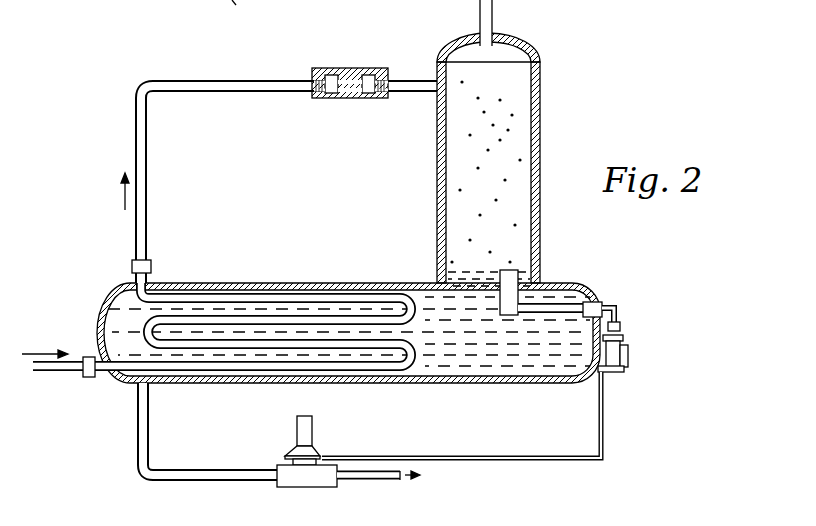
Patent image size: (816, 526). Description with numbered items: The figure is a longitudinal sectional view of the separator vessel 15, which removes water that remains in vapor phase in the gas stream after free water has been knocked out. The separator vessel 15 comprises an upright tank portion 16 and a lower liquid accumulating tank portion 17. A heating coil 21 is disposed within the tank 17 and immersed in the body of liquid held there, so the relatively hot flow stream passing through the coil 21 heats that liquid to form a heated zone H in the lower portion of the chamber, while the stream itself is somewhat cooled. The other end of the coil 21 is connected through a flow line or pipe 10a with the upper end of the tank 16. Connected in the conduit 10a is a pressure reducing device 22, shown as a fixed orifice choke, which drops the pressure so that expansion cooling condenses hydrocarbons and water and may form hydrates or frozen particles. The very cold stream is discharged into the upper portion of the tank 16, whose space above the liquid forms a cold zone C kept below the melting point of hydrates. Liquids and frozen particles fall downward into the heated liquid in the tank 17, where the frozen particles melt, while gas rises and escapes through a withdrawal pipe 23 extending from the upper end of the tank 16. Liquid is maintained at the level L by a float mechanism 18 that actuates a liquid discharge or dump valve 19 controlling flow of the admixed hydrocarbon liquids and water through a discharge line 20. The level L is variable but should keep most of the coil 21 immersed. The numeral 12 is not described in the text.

The flow line or pipe 10a is at (143, 151).
The conduit 12 is at (244, 10).
The separator vessel 15 is at (534, 42).
The upright tank portion 16 is at (540, 101).
The lower liquid accumulating tank portion 17 is at (434, 388).
The float mechanism 18 is at (588, 289).
The liquid discharge or dump valve 19 is at (318, 453).
The discharge line 20 is at (370, 485).
The heating coil 21 is at (278, 301).
The pressure reducing device 22 is at (358, 99).
The withdrawal pipe 23 is at (492, 22).
The cold zone C is at (503, 135).
The heated zone H is at (484, 335).
The liquid level L is at (488, 271).